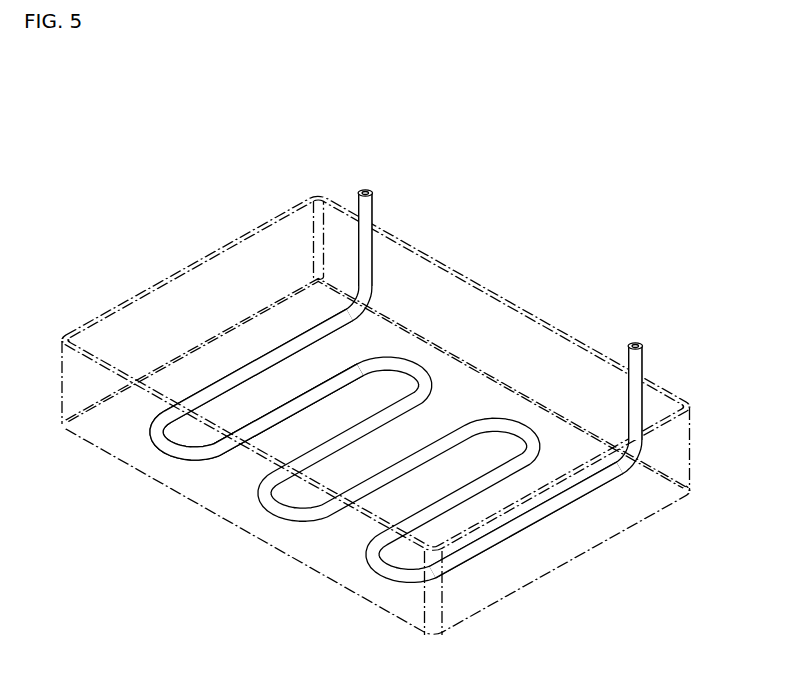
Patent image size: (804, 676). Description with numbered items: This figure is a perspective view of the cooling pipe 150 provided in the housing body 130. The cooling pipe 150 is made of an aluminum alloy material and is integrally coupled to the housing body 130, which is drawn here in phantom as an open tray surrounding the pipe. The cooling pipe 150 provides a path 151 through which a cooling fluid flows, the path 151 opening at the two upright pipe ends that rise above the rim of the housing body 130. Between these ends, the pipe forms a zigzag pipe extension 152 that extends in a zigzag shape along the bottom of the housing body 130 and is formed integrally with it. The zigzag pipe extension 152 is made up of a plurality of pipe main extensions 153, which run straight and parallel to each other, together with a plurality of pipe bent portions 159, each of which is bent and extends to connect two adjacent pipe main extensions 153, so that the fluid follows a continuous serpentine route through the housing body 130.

The housing body 130 is at (510, 300).
The cooling pipe 150 is at (372, 240).
The path 151 is at (363, 190).
The zigzag pipe extension 152 is at (234, 338).
The pipe main extensions 153 is at (312, 392).
The pipe bent portions 159 is at (177, 447).